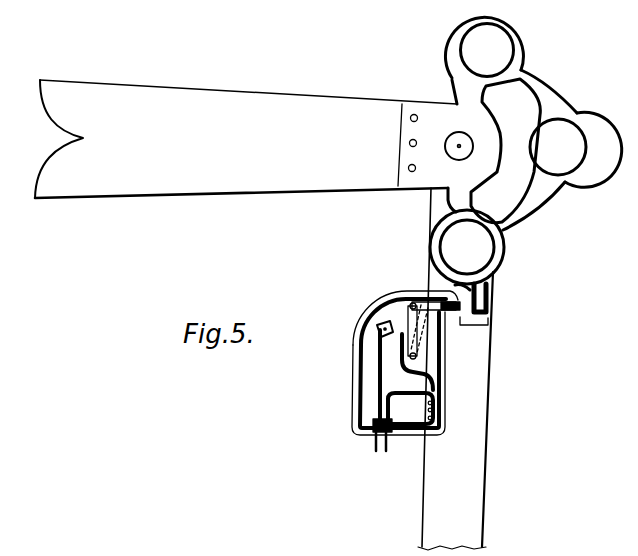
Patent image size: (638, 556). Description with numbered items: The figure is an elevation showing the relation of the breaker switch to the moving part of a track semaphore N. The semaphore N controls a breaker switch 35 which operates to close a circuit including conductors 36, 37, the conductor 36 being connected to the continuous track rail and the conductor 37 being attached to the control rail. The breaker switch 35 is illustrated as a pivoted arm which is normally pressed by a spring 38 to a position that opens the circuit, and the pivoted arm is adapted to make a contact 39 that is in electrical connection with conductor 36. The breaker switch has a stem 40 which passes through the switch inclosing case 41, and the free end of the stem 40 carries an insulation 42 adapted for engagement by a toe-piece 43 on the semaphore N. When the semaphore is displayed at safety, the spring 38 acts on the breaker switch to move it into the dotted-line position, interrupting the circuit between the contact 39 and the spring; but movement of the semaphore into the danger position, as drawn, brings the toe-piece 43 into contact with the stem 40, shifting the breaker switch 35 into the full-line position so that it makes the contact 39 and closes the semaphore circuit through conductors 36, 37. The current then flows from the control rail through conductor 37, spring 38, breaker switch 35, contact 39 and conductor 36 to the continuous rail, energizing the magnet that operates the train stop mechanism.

The semaphore N is at (265, 196).
The breaker switch 35 is at (413, 333).
The conductor 36 is at (375, 452).
The conductor 37 is at (388, 451).
The spring 38 is at (402, 368).
The contact 39 is at (394, 322).
The stem 40 is at (425, 302).
The switch inclosing case 41 is at (357, 340).
The insulation 42 is at (486, 323).
The toe-piece 43 is at (483, 297).